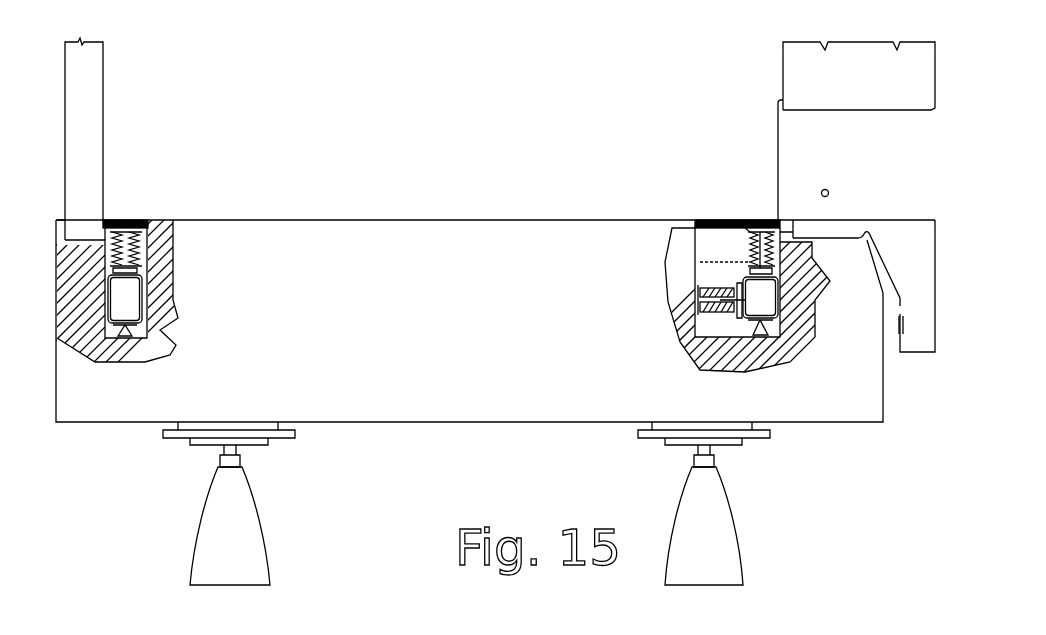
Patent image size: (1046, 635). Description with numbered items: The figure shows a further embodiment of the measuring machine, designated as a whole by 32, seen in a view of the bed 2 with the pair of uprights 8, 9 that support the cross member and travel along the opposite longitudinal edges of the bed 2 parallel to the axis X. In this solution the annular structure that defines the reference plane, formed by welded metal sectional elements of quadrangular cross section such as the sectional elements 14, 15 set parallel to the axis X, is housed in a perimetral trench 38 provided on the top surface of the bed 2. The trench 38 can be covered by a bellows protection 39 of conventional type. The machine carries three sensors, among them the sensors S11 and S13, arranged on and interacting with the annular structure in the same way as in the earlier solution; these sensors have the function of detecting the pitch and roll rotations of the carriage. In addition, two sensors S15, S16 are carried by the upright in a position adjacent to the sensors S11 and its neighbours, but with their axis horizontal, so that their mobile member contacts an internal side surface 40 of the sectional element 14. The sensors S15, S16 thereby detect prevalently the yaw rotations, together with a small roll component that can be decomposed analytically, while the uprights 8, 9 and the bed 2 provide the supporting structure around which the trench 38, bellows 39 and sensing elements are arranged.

The bed 2 is at (443, 253).
The upright 8 is at (803, 152).
The upright 9 is at (82, 131).
The sectional element 14 is at (780, 306).
The sectional element 15 is at (107, 338).
The measuring machine embodiment 32 is at (319, 146).
The perimetral trench 38 is at (733, 288).
The bellows protection 39 is at (751, 240).
The internal side surface 40 is at (760, 334).
The sensor S11 is at (745, 230).
The sensor S13 is at (145, 222).
The sensor S15 is at (728, 320).
The sensor S16 is at (797, 375).